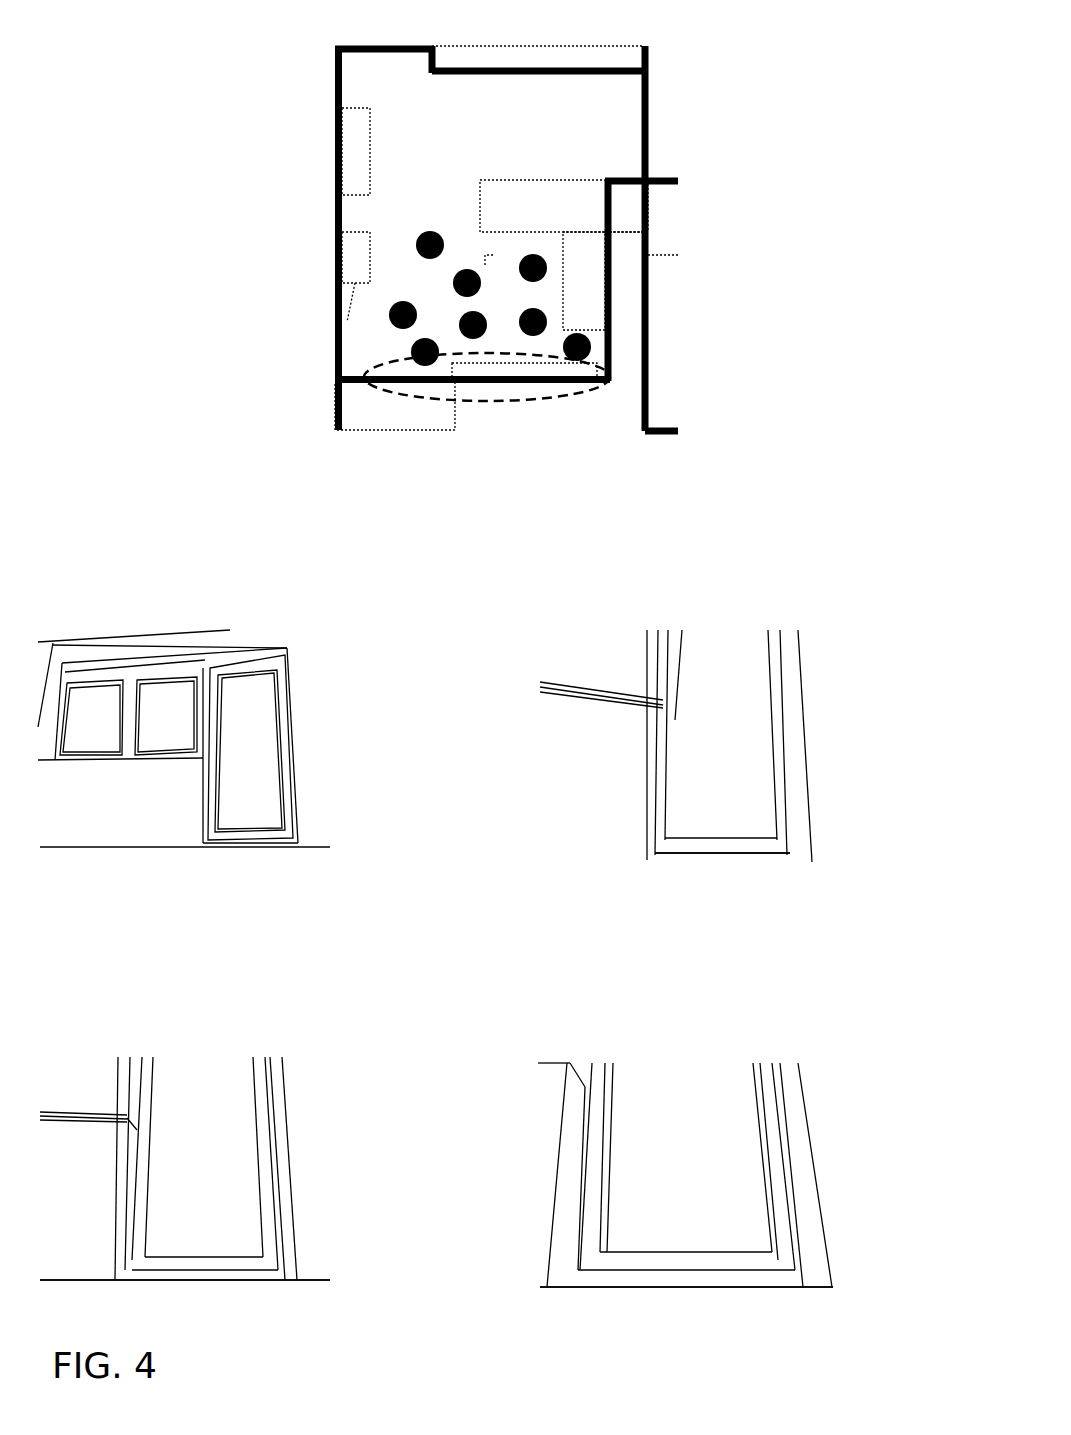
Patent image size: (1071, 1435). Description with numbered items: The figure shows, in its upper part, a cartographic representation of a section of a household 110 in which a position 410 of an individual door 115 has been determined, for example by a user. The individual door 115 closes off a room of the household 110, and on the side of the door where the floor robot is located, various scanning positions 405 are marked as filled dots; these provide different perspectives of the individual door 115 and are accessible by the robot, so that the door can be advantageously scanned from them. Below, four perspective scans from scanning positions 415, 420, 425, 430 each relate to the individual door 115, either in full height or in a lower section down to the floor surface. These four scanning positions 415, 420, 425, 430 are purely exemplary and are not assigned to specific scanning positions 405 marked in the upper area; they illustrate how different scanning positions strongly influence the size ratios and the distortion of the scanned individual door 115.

The household 110 is at (685, 90).
The individual door 115 is at (508, 370).
The scanning positions 405 is at (418, 248).
The position of the individual door 410 is at (368, 369).
The scanning position 415 is at (345, 638).
The scanning position 420 is at (347, 1063).
The scanning position 425 is at (840, 638).
The scanning position 430 is at (842, 1063).